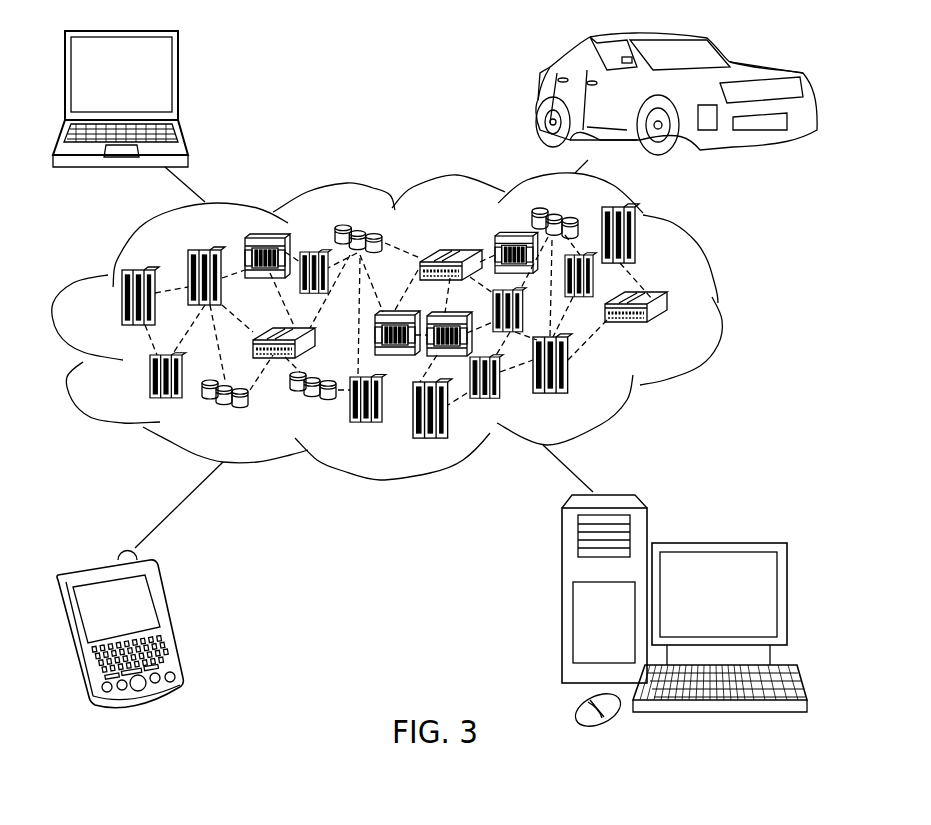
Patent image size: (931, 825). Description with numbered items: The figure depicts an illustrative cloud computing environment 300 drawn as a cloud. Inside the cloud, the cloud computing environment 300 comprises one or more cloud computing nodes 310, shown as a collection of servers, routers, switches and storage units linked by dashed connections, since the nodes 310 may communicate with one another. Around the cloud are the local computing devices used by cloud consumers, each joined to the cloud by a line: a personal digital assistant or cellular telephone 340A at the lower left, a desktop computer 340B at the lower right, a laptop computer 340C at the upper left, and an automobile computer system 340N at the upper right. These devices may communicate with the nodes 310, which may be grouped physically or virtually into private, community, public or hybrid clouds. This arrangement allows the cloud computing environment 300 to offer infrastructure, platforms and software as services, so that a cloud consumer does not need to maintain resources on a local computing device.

The cloud computing environment 300 is at (718, 303).
The cloud computing nodes 310 is at (670, 332).
The personal digital assistant (PDA) or cellular telephone 340A is at (167, 618).
The desktop computer 340B is at (717, 543).
The laptop computer 340C is at (178, 82).
The automobile computer system 340N is at (537, 97).